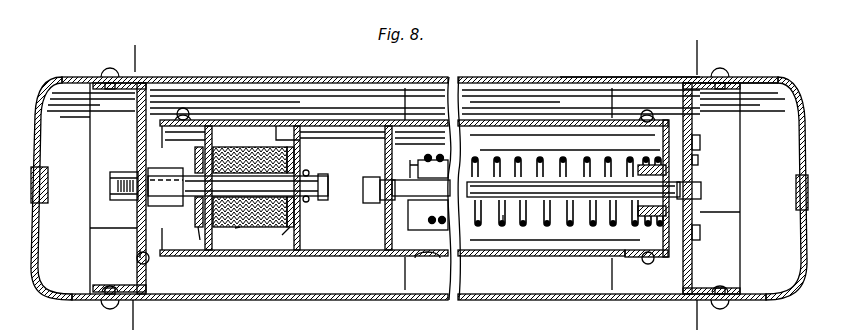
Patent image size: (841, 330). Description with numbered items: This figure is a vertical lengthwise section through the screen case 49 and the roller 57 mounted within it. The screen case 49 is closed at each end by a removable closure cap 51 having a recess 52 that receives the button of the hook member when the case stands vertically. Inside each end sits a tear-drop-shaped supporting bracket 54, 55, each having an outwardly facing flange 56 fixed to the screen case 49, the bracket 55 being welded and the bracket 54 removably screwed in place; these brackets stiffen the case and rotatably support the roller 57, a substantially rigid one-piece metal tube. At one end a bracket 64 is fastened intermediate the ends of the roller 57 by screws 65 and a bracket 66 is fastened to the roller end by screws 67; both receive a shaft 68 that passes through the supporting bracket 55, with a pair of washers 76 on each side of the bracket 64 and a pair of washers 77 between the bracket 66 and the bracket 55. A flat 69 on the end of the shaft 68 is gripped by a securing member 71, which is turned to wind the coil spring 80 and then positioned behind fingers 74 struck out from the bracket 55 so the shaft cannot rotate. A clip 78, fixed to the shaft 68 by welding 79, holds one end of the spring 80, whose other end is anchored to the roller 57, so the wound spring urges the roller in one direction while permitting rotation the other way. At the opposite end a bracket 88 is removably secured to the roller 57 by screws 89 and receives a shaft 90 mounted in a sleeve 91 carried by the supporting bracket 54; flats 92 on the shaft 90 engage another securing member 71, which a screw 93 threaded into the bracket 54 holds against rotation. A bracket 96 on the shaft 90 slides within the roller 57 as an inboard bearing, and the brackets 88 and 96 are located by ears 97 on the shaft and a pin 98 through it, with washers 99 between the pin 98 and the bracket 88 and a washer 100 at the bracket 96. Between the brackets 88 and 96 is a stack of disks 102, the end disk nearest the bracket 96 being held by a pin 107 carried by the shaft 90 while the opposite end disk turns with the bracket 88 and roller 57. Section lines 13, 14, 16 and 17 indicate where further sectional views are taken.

The closure cap 51 is at (57, 78).
The recess 52 is at (52, 172).
The supporting bracket 54 is at (140, 100).
The supporting bracket 55 is at (752, 82).
The flange 56 is at (720, 292).
The roller 57 is at (482, 120).
The screen case 49 is at (545, 78).
The bracket 64 is at (385, 150).
The screw 65 is at (430, 258).
The bracket 66 is at (681, 120).
The screw 67 is at (646, 112).
The shaft 68 is at (573, 203).
The flat 69 is at (702, 190).
The securing member 71 is at (692, 212).
The finger 74 is at (700, 233).
The washer 76 is at (395, 209).
The washer 77 is at (698, 160).
The clip 78 is at (408, 218).
The welding 79 is at (700, 142).
The coil spring 80 is at (503, 226).
The bracket 88 is at (233, 120).
The screw 89 is at (185, 112).
The shaft 90 is at (325, 182).
The sleeve 91 is at (137, 153).
The flat 92 is at (110, 183).
The screw 93 is at (137, 258).
The bracket 96 is at (275, 120).
The ear 97 is at (308, 172).
The pin 98 is at (160, 258).
The washer 99 is at (200, 240).
The washer 100 is at (282, 235).
The disk 102 is at (235, 228).
The pin 107 is at (278, 187).
The section line 13 is at (422, 102).
The section line 14 is at (632, 102).
The section line 16 is at (157, 54).
The section line 17 is at (712, 50).